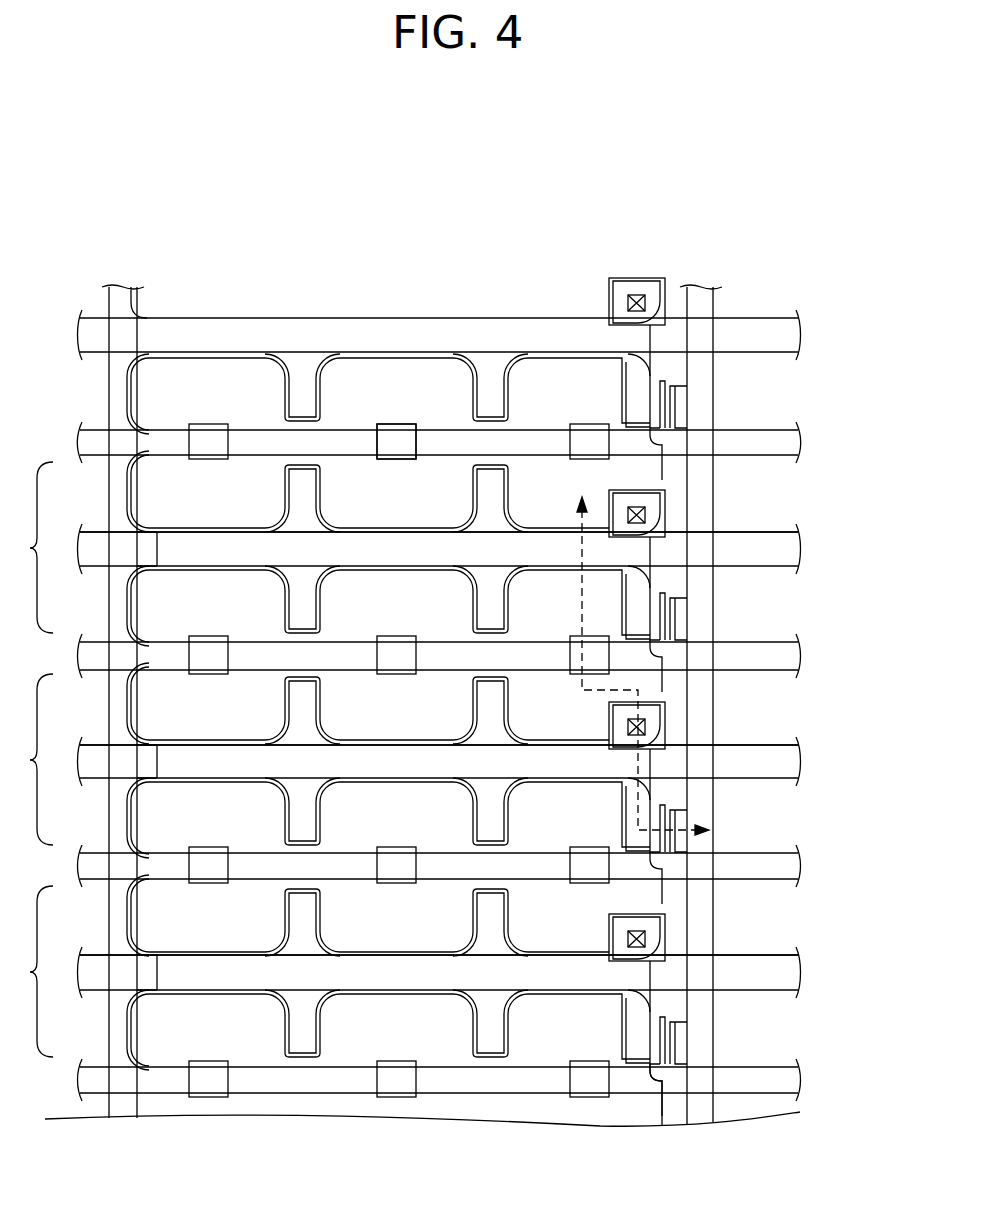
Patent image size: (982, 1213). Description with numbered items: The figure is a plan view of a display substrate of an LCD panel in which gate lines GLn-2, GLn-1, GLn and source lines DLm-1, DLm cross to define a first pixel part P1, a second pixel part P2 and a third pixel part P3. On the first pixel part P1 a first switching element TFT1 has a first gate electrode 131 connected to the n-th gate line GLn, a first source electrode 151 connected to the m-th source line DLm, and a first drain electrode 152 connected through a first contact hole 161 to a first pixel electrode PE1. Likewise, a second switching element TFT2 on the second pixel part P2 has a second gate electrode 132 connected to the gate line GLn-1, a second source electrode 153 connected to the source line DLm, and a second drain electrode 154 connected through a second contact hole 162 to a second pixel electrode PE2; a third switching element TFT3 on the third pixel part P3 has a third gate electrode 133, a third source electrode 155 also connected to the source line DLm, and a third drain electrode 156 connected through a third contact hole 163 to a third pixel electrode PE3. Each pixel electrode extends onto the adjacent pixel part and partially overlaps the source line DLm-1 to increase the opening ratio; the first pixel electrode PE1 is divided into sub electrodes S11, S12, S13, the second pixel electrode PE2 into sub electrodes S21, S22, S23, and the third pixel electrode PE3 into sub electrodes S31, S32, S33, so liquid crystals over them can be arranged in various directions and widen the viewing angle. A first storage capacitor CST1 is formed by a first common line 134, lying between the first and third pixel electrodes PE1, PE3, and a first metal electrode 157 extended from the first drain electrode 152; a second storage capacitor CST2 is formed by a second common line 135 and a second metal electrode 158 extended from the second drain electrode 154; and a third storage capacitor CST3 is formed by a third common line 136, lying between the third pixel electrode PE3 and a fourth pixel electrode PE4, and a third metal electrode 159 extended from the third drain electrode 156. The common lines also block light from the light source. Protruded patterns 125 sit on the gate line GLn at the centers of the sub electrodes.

The protruded pattern 125 is at (398, 460).
The first gate electrode 131 is at (711, 841).
The second gate electrode 132 is at (688, 594).
The third gate electrode 133 is at (711, 1055).
The first common line 134 is at (92, 752).
The second common line 135 is at (92, 540).
The third common line 136 is at (92, 964).
The first source electrode 151 is at (721, 826).
The first drain electrode 152 is at (711, 802).
The second source electrode 153 is at (683, 609).
The second drain electrode 154 is at (658, 625).
The third source electrode 155 is at (721, 1040).
The third drain electrode 156 is at (711, 1012).
The first metal electrode 157 is at (140, 760).
The second metal electrode 158 is at (140, 548).
The third metal electrode 159 is at (140, 972).
The first contact hole 161 is at (694, 721).
The second contact hole 162 is at (645, 516).
The third contact hole 163 is at (694, 933).
The (n-2)-th gate line GLn-2 is at (800, 444).
The (n-1)-th gate line GLn-1 is at (800, 656).
The n-th gate line GLn is at (800, 865).
The first storage capacitor CST1 is at (800, 761).
The second storage capacitor CST2 is at (800, 549).
The third storage capacitor CST3 is at (800, 972).
The (m-1)-th source line DLm-1 is at (118, 1108).
The m-th source line DLm is at (697, 1118).
The first pixel electrode PE1 is at (451, 703).
The second pixel electrode PE2 is at (665, 477).
The third pixel electrode PE3 is at (451, 915).
The fourth pixel electrode PE4 is at (640, 1005).
The first switching element TFT1 is at (746, 826).
The second switching element TFT2 is at (746, 614).
The third switching element TFT3 is at (746, 1038).
The first pixel part P1 is at (29, 759).
The second pixel part P2 is at (29, 547).
The third pixel part P3 is at (29, 971).
The first sub electrode S11 is at (623, 666).
The second sub electrode S12 is at (396, 643).
The third sub electrode S13 is at (208, 643).
The first sub electrode S21 is at (589, 429).
The second sub electrode S22 is at (396, 429).
The third sub electrode S23 is at (208, 429).
The first sub electrode S31 is at (589, 853).
The second sub electrode S32 is at (396, 853).
The third sub electrode S33 is at (208, 853).